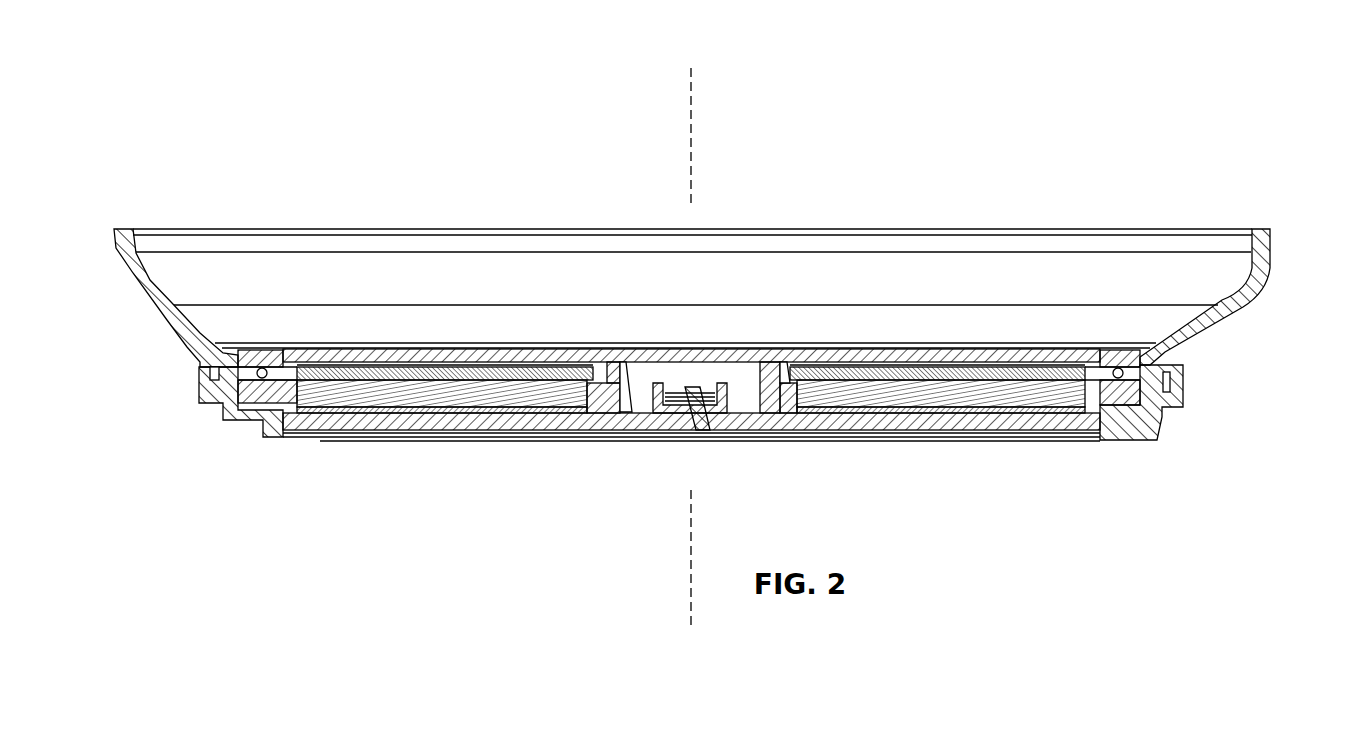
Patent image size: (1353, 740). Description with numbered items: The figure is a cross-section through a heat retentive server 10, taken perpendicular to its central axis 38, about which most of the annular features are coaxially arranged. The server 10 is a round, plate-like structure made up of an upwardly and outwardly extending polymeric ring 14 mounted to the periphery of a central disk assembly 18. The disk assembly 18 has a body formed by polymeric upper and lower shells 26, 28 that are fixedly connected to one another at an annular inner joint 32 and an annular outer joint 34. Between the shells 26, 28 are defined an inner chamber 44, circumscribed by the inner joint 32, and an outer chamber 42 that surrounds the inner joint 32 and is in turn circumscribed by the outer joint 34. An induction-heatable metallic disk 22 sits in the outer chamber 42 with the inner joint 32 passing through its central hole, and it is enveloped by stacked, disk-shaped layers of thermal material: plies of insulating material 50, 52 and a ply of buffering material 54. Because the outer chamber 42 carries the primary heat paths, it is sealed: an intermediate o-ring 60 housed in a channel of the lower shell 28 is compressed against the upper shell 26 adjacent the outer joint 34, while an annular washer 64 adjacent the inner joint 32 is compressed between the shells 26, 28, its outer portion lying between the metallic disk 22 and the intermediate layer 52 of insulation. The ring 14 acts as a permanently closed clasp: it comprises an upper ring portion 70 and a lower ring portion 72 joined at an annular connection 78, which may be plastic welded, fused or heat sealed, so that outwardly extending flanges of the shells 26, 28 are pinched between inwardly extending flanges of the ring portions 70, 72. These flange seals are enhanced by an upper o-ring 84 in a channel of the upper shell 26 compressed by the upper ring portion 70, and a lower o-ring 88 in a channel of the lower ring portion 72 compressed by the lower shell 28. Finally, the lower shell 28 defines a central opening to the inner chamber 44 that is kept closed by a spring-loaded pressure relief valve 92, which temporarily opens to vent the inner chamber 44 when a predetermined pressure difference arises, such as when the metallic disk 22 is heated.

The heat retentive server 10 is at (268, 162).
The polymeric ring 14 is at (1273, 232).
The central disk assembly 18 is at (350, 440).
The metallic disk 22 is at (860, 352).
The upper shell 26 is at (997, 352).
The lower shell 28 is at (1040, 442).
The inner joint 32 is at (770, 356).
The outer joint 34 is at (275, 358).
The central axis 38 is at (692, 100).
The outer chamber 42 is at (285, 370).
The inner chamber 44 is at (637, 406).
The ply of insulating material 50 is at (898, 426).
The intermediate layer of insulation 52 is at (830, 414).
The ply of buffering material 54 is at (920, 354).
The intermediate o-ring 60 is at (1177, 402).
The annular washer 64 is at (772, 432).
The upper ring portion 70 is at (137, 230).
The lower ring portion 72 is at (198, 405).
The annular connection 78 is at (1183, 392).
The upper o-ring 84 is at (1147, 364).
The lower o-ring 88 is at (1128, 433).
The spring-loaded pressure relief valve 92 is at (684, 439).